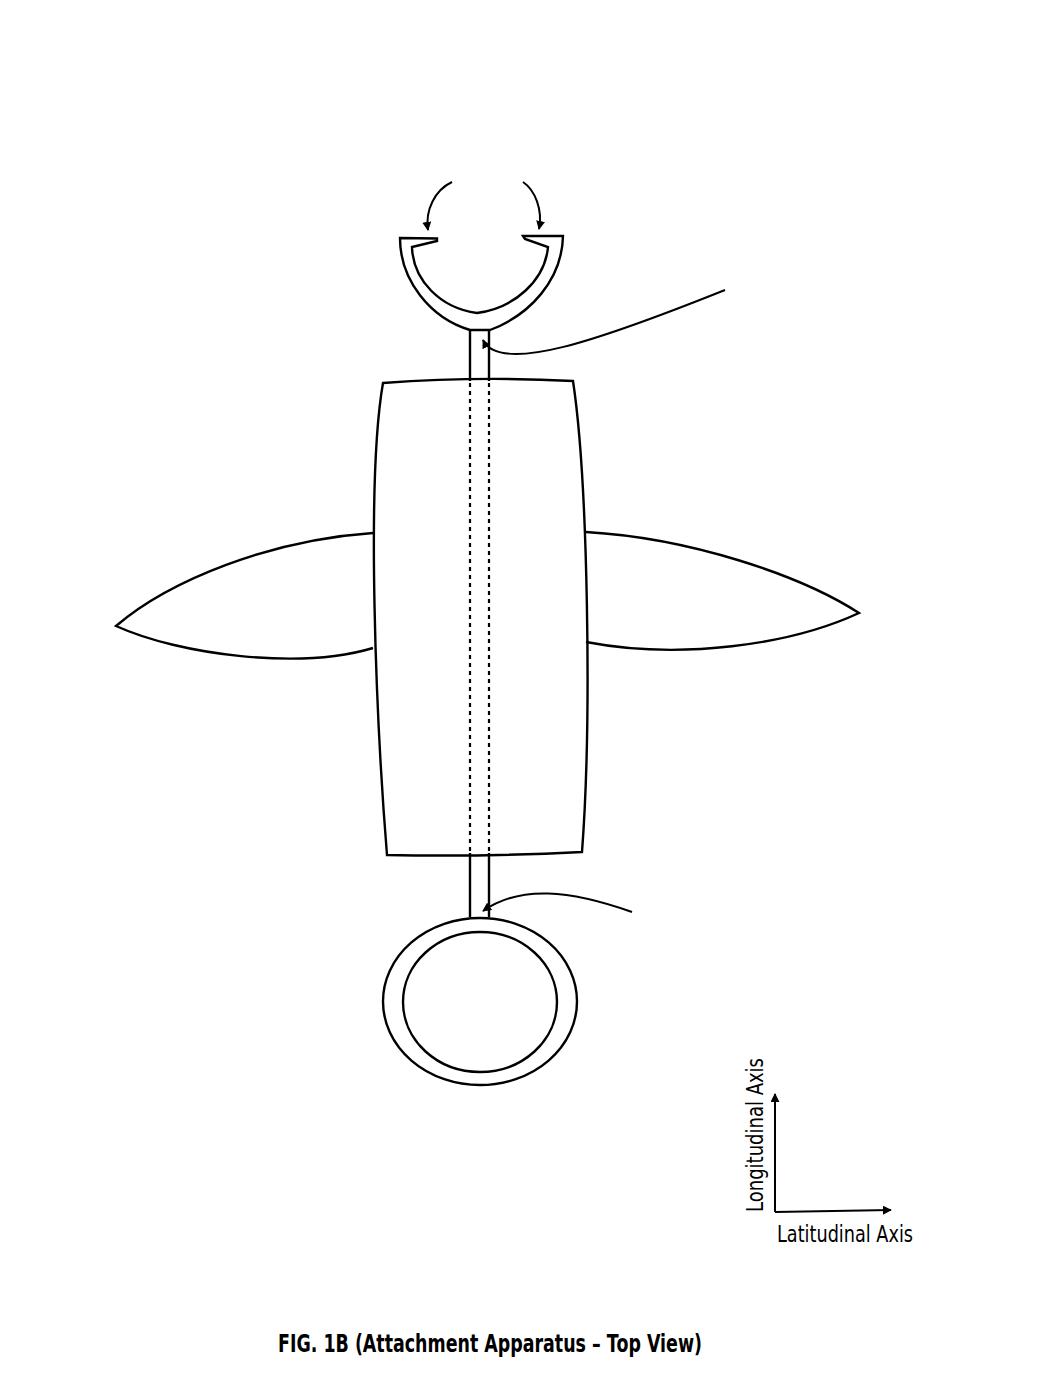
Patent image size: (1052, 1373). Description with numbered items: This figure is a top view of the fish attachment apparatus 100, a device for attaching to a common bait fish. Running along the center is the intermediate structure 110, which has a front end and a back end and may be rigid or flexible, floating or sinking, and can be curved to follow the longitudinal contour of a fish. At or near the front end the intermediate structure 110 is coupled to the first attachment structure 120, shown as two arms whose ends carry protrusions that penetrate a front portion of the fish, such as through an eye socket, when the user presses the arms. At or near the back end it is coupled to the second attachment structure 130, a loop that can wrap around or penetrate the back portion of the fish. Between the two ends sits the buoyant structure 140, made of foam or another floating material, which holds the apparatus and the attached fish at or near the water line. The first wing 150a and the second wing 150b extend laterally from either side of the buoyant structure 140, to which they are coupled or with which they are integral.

The fish attachment apparatus 100 is at (136, 45).
The intermediate structure 110 is at (495, 438).
The first attachment structure 120 is at (403, 285).
The second attachment structure 130 is at (428, 1084).
The buoyant structure 140 is at (377, 460).
The first wing 150a is at (737, 612).
The second wing 150b is at (345, 619).